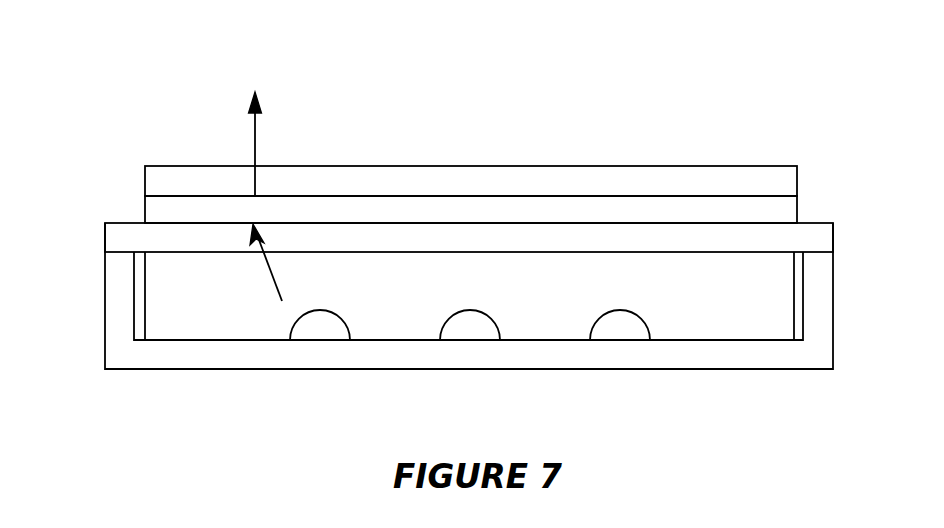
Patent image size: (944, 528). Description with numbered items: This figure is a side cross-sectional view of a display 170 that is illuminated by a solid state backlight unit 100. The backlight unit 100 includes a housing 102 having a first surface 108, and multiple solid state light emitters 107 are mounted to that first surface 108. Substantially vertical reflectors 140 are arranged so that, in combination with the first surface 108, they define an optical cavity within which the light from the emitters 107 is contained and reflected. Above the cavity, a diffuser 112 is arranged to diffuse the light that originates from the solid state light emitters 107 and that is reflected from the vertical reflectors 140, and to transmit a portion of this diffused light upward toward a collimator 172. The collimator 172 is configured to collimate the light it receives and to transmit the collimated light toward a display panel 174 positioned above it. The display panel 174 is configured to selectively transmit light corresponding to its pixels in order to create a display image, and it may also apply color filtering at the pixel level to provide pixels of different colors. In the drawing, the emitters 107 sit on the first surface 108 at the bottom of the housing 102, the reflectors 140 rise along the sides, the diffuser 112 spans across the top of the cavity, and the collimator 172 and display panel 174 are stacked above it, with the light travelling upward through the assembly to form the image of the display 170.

The solid state backlight unit 100 is at (126, 222).
The housing 102 is at (647, 352).
The solid state light emitters 107 is at (317, 323).
The first surface 108 is at (376, 341).
The diffuser 112 is at (795, 238).
The vertical reflectors 140 is at (146, 302).
The display 170 is at (611, 65).
The collimator 172 is at (470, 210).
The display panel 174 is at (609, 181).